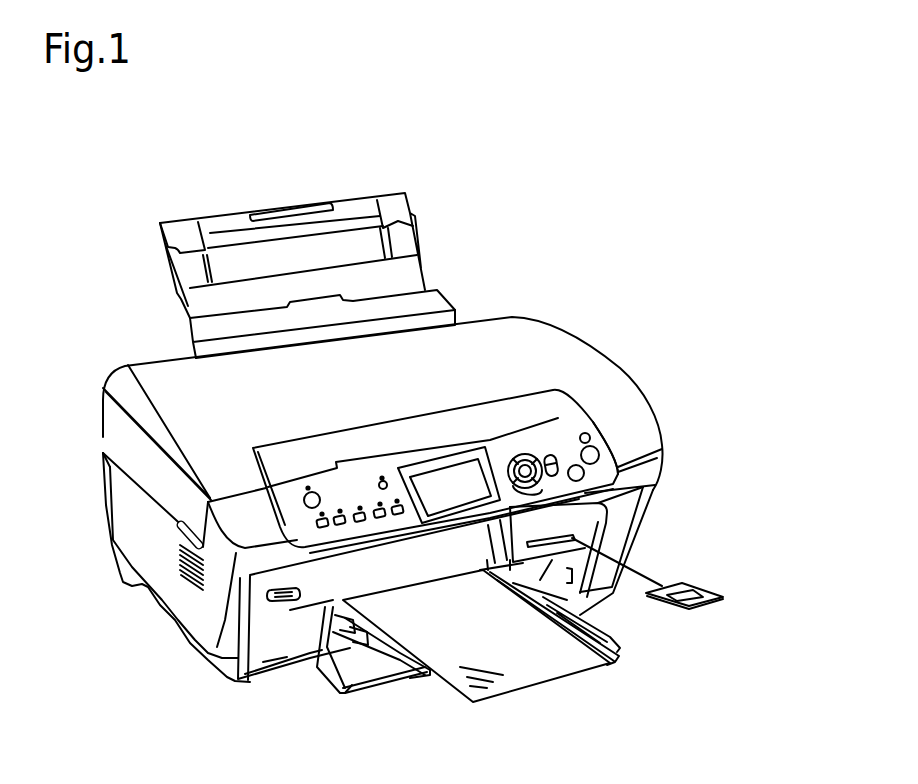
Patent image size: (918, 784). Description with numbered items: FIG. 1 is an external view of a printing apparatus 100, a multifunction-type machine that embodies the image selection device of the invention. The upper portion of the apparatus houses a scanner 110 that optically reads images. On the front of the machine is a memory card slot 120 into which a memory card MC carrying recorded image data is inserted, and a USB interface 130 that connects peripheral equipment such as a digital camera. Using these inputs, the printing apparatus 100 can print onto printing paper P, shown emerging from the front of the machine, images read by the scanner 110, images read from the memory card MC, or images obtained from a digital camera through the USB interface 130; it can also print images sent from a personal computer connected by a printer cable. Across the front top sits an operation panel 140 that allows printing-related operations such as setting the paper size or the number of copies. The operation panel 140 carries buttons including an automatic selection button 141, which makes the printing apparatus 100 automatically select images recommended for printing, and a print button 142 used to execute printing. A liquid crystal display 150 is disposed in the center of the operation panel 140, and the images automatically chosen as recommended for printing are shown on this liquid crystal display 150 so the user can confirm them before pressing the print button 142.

The printing apparatus 100 is at (449, 437).
The scanner 110 is at (523, 370).
The memory card slot 120 is at (558, 543).
The USB interface 130 is at (280, 601).
The operation panel 140 is at (521, 389).
The automatic selection button 141 is at (592, 449).
The print button 142 is at (620, 476).
The liquid crystal display 150 is at (479, 472).
The memory card MC is at (707, 587).
The printing paper P is at (518, 668).